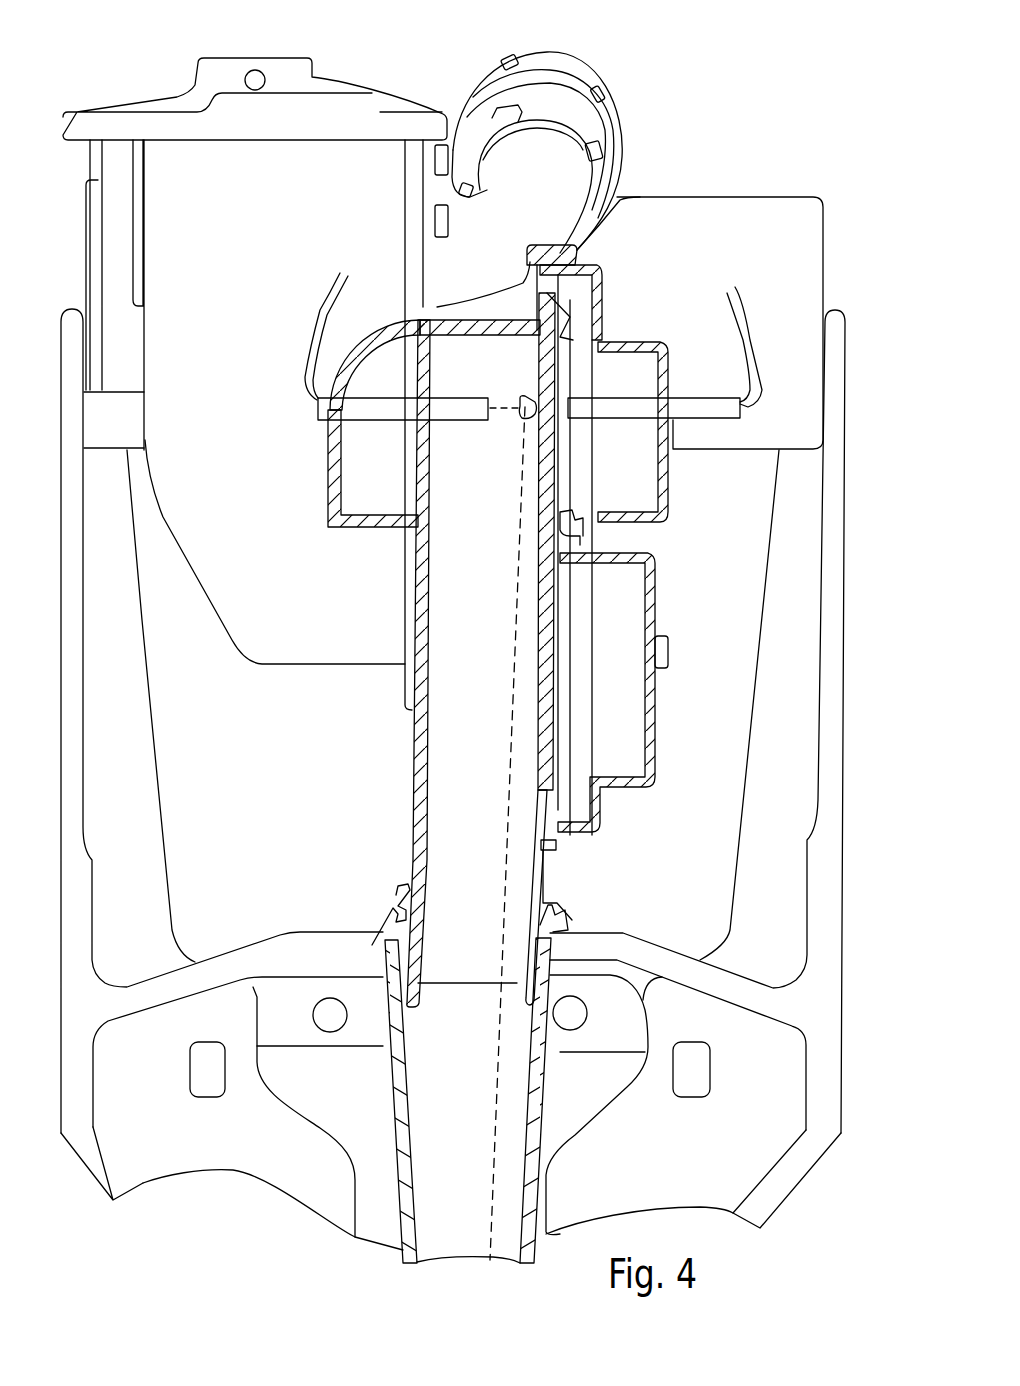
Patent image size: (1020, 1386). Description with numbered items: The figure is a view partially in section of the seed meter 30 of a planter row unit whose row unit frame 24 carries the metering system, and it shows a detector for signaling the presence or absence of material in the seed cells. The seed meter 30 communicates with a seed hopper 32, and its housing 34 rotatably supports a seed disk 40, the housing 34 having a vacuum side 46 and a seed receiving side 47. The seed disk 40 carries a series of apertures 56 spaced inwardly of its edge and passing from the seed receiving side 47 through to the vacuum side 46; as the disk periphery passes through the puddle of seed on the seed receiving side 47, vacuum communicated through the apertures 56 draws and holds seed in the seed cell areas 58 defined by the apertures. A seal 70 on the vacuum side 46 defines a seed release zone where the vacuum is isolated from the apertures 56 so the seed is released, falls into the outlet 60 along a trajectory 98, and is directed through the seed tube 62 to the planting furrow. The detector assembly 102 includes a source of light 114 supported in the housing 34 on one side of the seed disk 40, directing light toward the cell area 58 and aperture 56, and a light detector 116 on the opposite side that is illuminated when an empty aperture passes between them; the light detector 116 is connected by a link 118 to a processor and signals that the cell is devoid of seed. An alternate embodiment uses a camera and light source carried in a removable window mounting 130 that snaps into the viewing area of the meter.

The row unit frame 24 is at (93, 1178).
The seed meter 30 is at (742, 152).
The seed hopper 32 is at (147, 105).
The housing 34 is at (557, 265).
The seed disk 40 is at (540, 357).
The vacuum side 46 is at (613, 693).
The seed receiving side 47 is at (467, 608).
The apertures 56 is at (548, 422).
The seed cell areas 58 is at (530, 396).
The outlet 60 is at (456, 1024).
The seed tube 62 is at (380, 1258).
The seal 70 is at (563, 547).
The trajectory 98 is at (509, 797).
The detector assembly 102 is at (770, 354).
The source of light 114 is at (360, 418).
The light detector 116 is at (700, 435).
The link 118 is at (747, 353).
The removable window mounting 130 is at (325, 483).